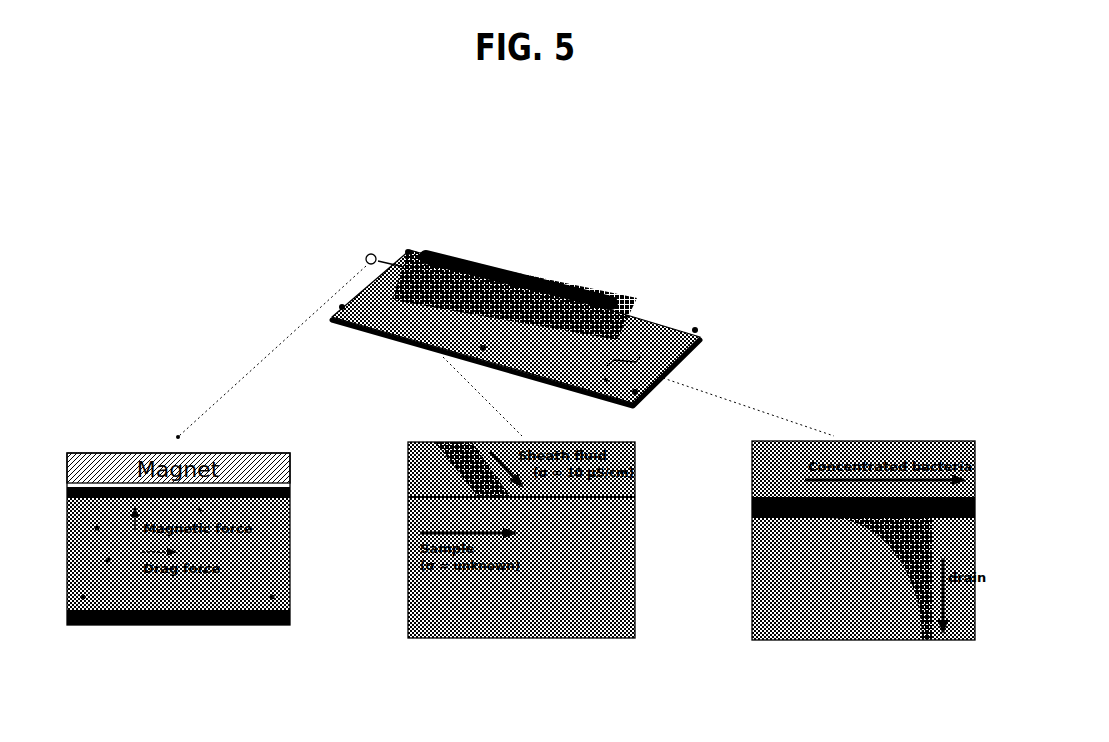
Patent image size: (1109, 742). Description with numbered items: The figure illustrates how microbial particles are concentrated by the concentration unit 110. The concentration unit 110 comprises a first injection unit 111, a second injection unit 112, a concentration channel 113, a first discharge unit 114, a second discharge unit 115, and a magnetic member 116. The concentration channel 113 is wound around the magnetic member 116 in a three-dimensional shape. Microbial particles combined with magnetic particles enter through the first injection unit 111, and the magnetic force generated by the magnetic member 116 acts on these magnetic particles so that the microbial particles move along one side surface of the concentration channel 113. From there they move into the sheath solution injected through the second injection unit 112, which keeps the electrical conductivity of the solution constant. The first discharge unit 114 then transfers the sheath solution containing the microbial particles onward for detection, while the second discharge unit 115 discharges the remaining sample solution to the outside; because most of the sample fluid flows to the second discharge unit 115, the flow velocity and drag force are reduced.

The concentration unit 110 is at (521, 177).
The first injection unit 111 is at (362, 251).
The second injection unit 112 is at (390, 287).
The concentration channel 113 is at (465, 317).
The first discharge unit 114 is at (645, 355).
The second discharge unit 115 is at (601, 378).
The magnetic member 116 is at (569, 281).